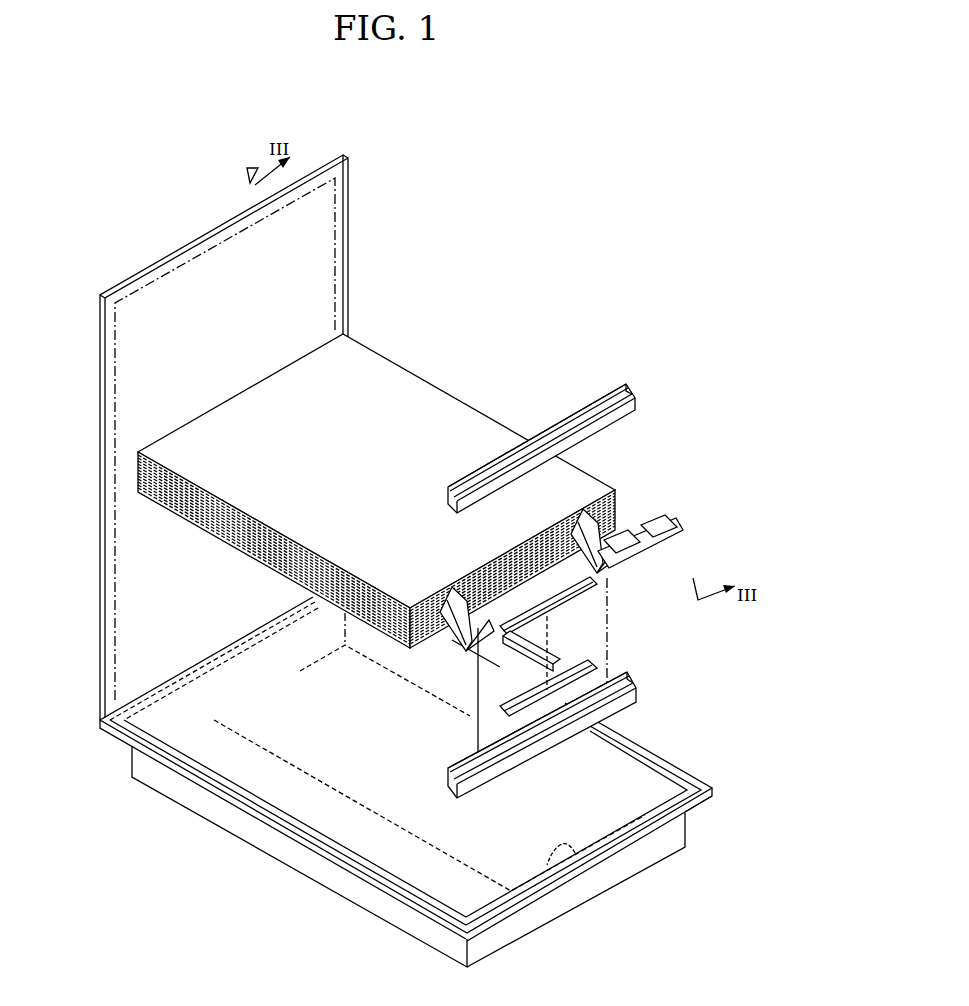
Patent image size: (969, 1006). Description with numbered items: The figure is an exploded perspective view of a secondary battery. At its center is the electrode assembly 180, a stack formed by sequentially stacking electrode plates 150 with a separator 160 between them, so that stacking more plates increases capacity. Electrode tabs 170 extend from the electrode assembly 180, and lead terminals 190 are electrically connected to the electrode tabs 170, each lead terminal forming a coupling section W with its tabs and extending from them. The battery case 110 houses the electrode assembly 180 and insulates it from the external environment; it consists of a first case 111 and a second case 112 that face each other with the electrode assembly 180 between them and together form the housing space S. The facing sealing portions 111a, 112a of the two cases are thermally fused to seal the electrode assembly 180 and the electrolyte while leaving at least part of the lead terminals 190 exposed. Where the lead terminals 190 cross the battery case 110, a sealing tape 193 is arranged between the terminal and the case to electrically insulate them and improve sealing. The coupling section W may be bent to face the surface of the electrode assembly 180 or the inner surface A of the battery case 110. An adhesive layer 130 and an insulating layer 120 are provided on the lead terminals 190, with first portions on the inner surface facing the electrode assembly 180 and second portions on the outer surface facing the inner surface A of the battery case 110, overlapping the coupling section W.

The battery case 110 is at (152, 836).
The first case 111 is at (352, 210).
The sealing portion 111a is at (345, 265).
The second case 112 is at (343, 888).
The sealing portion 112a is at (430, 900).
The insulating layer 120 is at (624, 405).
The adhesive layer 130 is at (608, 392).
The electrode plates 150 is at (383, 370).
The separator 160 is at (137, 468).
The electrode tabs 170 is at (600, 522).
The electrode assembly 180 is at (466, 380).
The lead terminals 190 is at (668, 560).
The sealing tape 193 is at (650, 548).
The housing space S is at (337, 790).
The inner surface A is at (586, 852).
The coupling section W is at (619, 639).